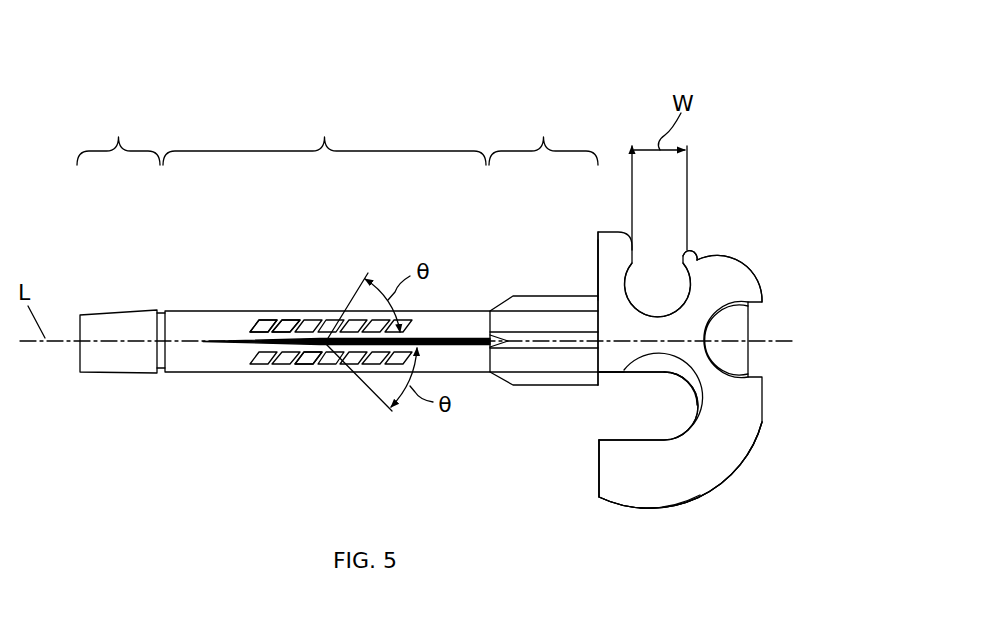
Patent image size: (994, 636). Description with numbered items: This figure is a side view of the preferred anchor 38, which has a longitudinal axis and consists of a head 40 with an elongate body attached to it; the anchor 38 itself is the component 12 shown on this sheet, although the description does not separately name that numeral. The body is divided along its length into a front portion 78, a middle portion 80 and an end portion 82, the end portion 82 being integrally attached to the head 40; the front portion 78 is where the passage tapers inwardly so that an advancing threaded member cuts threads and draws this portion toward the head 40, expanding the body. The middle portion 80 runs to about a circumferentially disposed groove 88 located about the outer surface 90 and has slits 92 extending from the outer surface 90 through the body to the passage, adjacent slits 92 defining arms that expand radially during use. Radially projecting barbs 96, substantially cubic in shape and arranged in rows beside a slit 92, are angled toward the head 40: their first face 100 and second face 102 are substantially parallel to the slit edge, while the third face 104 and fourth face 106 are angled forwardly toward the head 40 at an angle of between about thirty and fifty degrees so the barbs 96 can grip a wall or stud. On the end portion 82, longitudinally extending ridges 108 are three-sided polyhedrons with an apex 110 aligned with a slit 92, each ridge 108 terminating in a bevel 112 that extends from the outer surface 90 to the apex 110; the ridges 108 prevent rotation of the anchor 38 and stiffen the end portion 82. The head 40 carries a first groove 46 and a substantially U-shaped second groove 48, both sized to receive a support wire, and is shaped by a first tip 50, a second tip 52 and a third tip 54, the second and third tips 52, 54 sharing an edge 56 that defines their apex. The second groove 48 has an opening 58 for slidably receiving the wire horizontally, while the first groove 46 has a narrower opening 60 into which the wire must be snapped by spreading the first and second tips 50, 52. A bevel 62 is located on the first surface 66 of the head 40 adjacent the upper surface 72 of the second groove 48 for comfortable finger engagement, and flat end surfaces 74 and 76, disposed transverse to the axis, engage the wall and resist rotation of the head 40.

The surgical instrument 12 is at (462, 88).
The anchor 38 is at (798, 110).
The head 40 is at (800, 330).
The first groove 46 is at (697, 258).
The second groove 48 is at (712, 390).
The first tip 50 is at (608, 213).
The second tip 52 is at (772, 265).
The third tip 54 is at (692, 514).
The edge 56 is at (737, 255).
The opening 58 is at (602, 425).
The opening 60 is at (656, 270).
The bevel 62 is at (708, 402).
The first surface 66 is at (650, 500).
The upper surface 72 is at (628, 376).
The flat end surface 74 is at (598, 250).
The flat end surface 76 is at (598, 482).
The front portion 78 is at (118, 243).
The middle portion 80 is at (324, 139).
The end portion 82 is at (543, 249).
The circumferentially disposed groove 88 is at (162, 312).
The outer surface 90 is at (470, 311).
The slit 92 is at (234, 338).
The barb 96 is at (288, 370).
The first face 100 is at (312, 320).
The second face 102 is at (320, 360).
The third face 104 is at (289, 322).
The fourth face 106 is at (250, 324).
The ridge 108 is at (515, 384).
The apex 110 is at (568, 297).
The bevel 112 is at (504, 294).